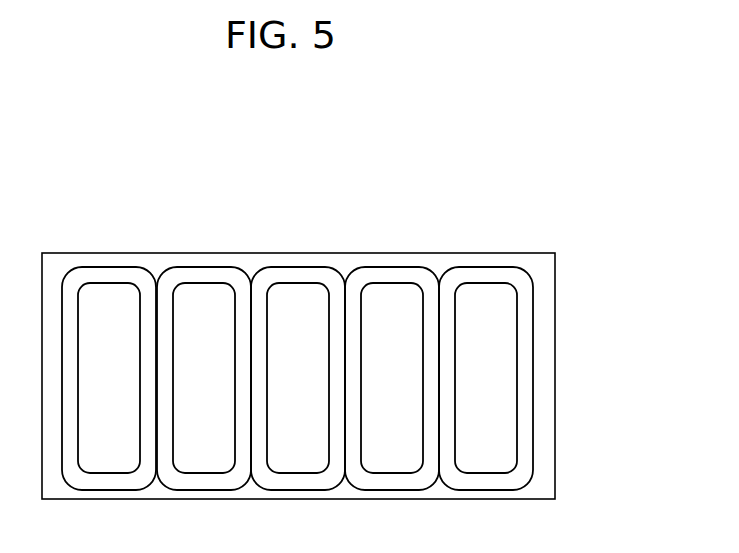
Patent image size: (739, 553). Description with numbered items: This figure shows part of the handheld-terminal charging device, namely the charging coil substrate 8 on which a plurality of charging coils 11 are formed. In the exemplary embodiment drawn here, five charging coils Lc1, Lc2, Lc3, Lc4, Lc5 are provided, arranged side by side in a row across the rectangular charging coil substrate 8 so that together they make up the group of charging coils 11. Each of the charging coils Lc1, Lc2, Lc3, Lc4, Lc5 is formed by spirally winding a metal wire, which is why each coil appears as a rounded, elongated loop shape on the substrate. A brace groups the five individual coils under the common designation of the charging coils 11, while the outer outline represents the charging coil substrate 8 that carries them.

The charging coil substrate 8 is at (555, 368).
The charging coils 11 is at (512, 157).
The charging coil Lc1 is at (109, 267).
The charging coil Lc2 is at (205, 267).
The charging coil Lc3 is at (298, 267).
The charging coil Lc4 is at (386, 267).
The charging coil Lc5 is at (478, 267).